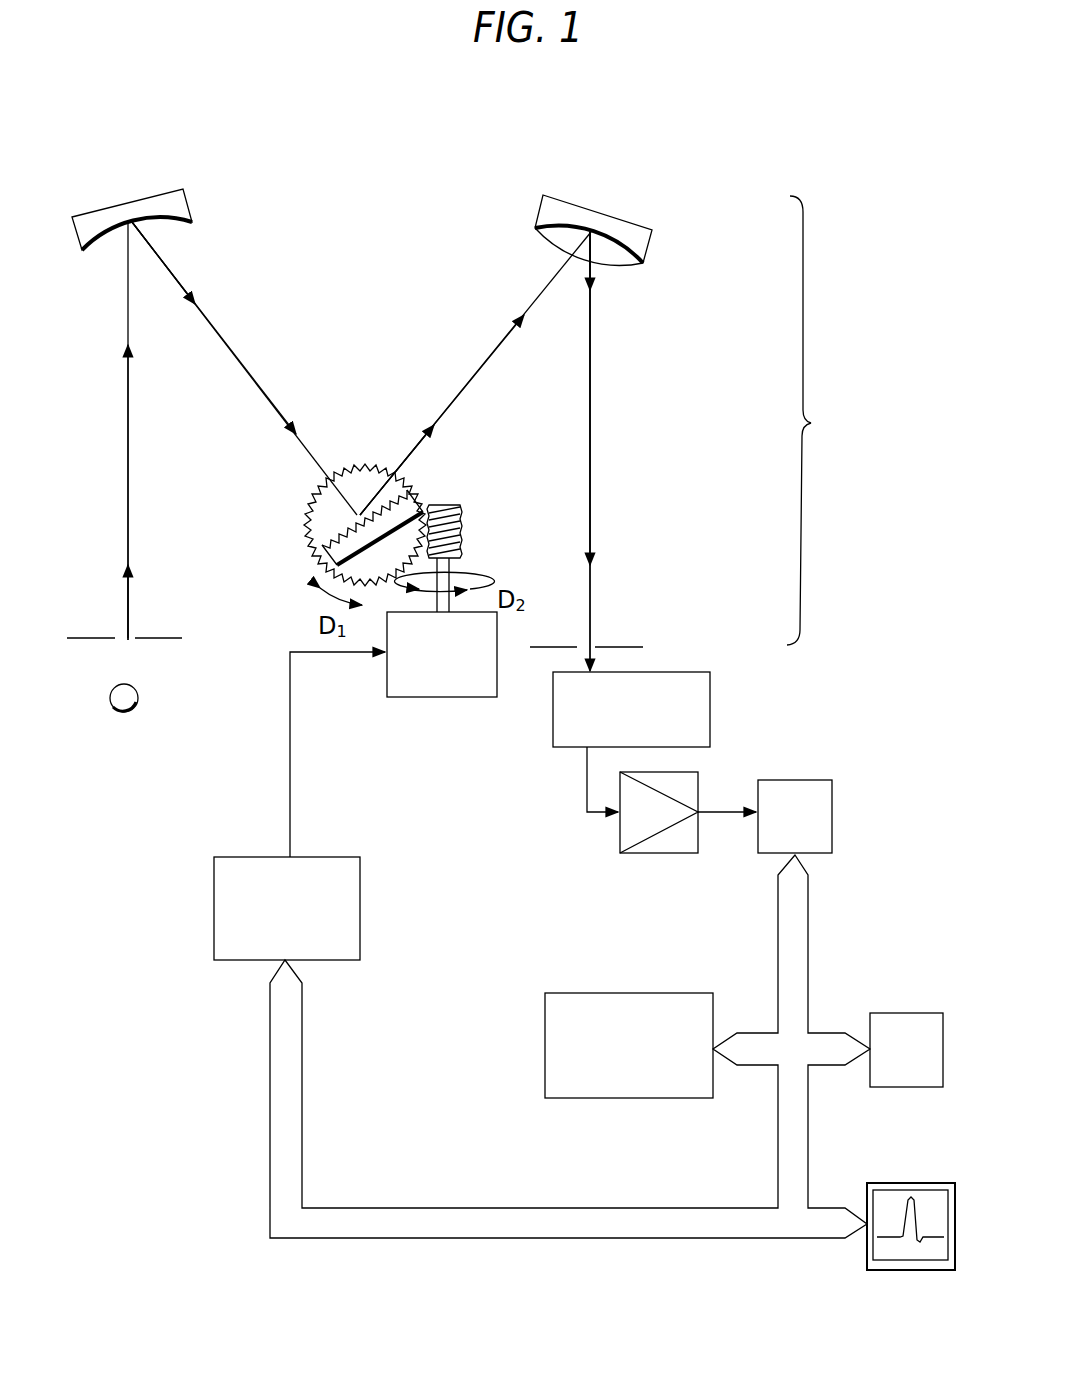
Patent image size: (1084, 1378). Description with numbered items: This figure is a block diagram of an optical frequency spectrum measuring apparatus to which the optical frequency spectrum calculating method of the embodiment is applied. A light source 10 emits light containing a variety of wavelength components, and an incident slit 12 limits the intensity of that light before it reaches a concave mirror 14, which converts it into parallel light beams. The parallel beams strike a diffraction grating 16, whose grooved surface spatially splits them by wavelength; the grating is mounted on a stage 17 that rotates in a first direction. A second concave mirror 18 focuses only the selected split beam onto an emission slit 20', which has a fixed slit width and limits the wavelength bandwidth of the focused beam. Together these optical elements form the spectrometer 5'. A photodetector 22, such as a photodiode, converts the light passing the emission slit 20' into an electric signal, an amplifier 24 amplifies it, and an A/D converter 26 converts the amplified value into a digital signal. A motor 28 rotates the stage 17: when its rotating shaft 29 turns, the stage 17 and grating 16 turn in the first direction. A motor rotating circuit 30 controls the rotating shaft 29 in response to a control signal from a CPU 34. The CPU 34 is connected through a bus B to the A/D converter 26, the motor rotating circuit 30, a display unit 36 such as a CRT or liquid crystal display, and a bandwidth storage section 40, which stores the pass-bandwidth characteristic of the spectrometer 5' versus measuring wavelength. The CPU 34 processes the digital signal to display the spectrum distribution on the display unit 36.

The spectrometer 5' is at (813, 420).
The light source 10 is at (138, 697).
The incident slit 12 is at (83, 640).
The concave mirror 14 is at (192, 203).
The diffraction grating 16 is at (322, 548).
The stage 17 is at (312, 497).
The concave mirror 18 is at (540, 212).
The emission slit 20' is at (593, 620).
The photodetector 22 is at (710, 710).
The amplifier 24 is at (660, 853).
The A/D converter 26 is at (793, 779).
The motor 28 is at (448, 697).
The rotating shaft 29 is at (462, 568).
The motor rotating circuit 30 is at (214, 905).
The CPU 34 is at (906, 1013).
The display unit 36 is at (910, 1183).
The bandwidth storage section 40 is at (628, 993).
The bus B is at (776, 1145).